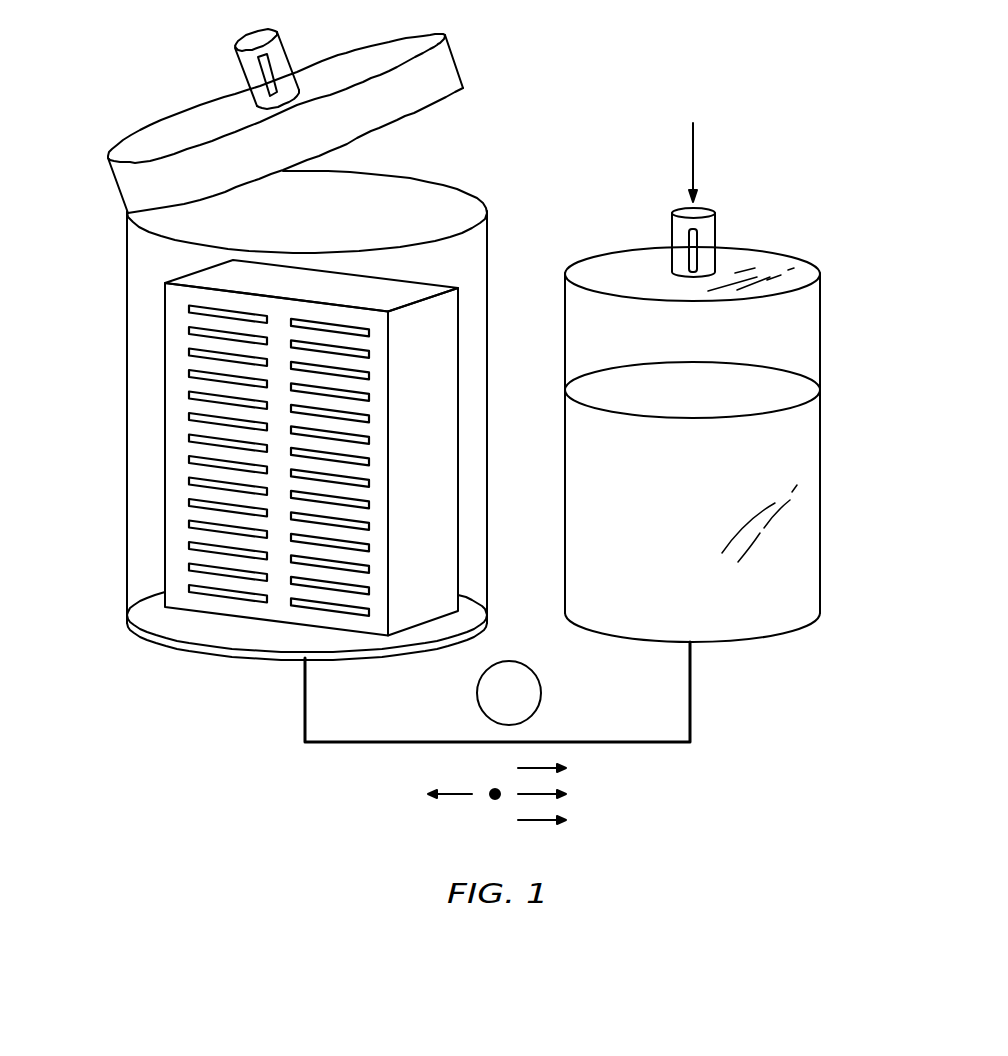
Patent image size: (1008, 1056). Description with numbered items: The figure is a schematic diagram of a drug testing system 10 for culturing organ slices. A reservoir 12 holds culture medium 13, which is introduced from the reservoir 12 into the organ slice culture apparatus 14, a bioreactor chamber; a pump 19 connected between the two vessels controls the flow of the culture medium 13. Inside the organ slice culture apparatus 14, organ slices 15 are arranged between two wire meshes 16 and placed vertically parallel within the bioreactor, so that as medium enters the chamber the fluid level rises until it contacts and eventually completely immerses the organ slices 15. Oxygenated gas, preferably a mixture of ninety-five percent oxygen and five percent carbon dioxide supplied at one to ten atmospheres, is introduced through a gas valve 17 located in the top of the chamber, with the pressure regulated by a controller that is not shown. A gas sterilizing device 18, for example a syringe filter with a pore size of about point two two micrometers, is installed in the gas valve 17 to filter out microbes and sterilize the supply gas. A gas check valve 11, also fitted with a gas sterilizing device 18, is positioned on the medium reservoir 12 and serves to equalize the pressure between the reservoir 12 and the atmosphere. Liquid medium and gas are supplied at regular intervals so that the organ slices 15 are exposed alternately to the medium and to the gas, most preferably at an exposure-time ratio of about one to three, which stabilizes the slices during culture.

The drug testing system 10 is at (782, 138).
The gas check valve 11 is at (699, 145).
The reservoir 12 is at (822, 485).
The culture medium 13 is at (793, 388).
The organ slice culture apparatus 14 is at (112, 462).
The organ slices 15 is at (190, 372).
The wire meshes 16 is at (163, 397).
The gas valve 17 is at (253, 33).
The gas sterilizing device 18 is at (262, 78).
The pump 19 is at (543, 692).